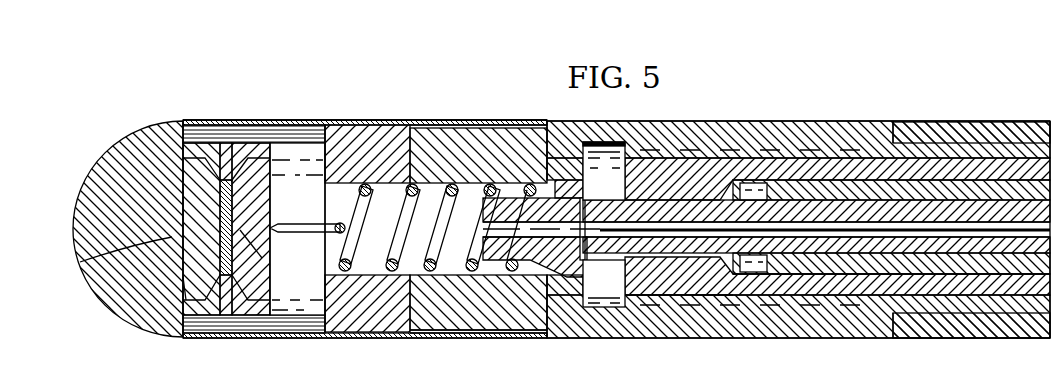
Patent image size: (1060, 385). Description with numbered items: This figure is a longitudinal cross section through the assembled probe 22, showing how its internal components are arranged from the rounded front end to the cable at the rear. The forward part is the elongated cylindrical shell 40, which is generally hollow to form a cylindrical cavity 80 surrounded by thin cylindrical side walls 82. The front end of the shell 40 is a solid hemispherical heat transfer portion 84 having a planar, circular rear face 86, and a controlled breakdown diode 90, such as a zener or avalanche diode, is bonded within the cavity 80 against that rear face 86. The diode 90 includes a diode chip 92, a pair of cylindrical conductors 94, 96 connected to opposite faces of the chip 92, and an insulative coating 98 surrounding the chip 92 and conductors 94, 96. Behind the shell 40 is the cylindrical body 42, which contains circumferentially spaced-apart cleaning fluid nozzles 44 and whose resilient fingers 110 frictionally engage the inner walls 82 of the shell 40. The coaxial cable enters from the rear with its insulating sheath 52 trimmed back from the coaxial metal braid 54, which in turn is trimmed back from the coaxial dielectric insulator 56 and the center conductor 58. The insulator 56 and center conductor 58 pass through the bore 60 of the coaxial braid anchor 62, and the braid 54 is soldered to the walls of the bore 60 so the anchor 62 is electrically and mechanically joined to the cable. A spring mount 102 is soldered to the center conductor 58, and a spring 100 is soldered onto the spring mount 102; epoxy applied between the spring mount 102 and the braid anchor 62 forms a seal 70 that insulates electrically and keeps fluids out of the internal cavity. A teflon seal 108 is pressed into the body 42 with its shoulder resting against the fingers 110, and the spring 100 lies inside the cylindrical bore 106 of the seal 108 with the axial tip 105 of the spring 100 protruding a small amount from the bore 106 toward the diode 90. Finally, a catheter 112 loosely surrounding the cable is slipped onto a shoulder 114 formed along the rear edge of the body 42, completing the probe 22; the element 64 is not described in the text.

The probe 22 is at (434, 100).
The shell 40 is at (352, 124).
The body 42 is at (801, 120).
The cleaning fluid nozzles 44 is at (727, 130).
The insulating sheath 52 is at (942, 285).
The coaxial metal braid 54 is at (812, 285).
The coaxial dielectric insulator 56 is at (617, 210).
The center conductor 58 is at (486, 214).
The bore 60 is at (764, 283).
The coaxial braid anchor 62 is at (690, 300).
The bushing 64 is at (850, 288).
The seal 70 is at (604, 283).
The cylindrical cavity 80 is at (297, 229).
The cylindrical side walls 82 is at (306, 338).
The heat transfer portion 84 is at (84, 210).
The rear face 86 is at (183, 277).
The diode 90 is at (230, 318).
The diode chip 92 is at (255, 198).
The cylindrical conductor 94 is at (80, 262).
The cylindrical conductor 96 is at (262, 258).
The insulative coating 98 is at (228, 145).
The spring 100 is at (356, 238).
The spring mount 102 is at (490, 250).
The axial tip 105 is at (283, 224).
The cylindrical bore 106 is at (292, 229).
The teflon seal 108 is at (372, 333).
The resilient fingers 110 is at (446, 332).
The catheter 112 is at (922, 124).
The shoulder 114 is at (1000, 152).